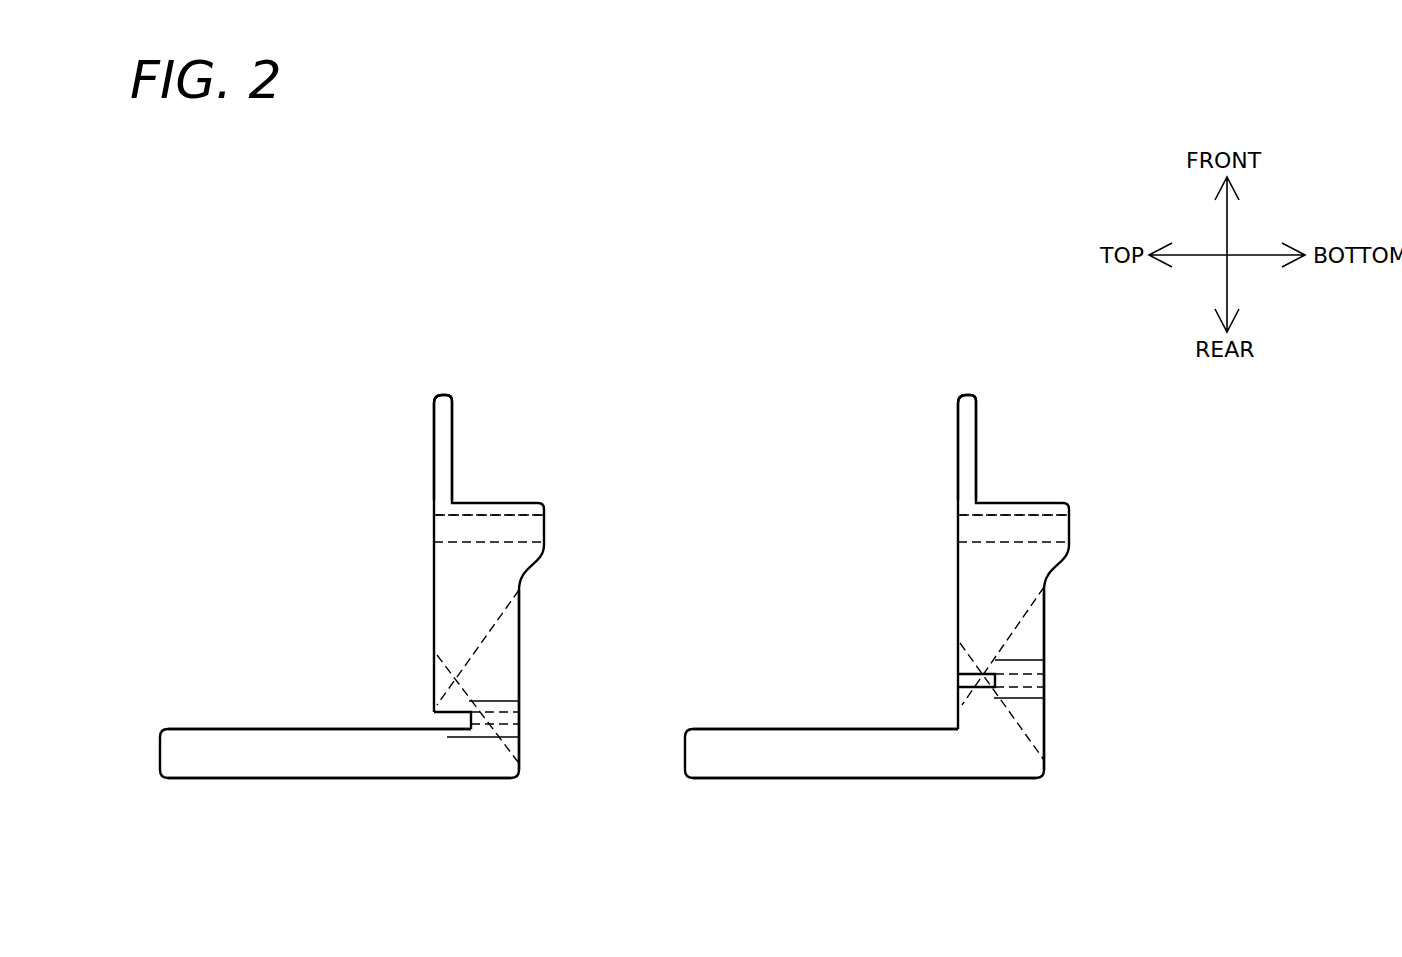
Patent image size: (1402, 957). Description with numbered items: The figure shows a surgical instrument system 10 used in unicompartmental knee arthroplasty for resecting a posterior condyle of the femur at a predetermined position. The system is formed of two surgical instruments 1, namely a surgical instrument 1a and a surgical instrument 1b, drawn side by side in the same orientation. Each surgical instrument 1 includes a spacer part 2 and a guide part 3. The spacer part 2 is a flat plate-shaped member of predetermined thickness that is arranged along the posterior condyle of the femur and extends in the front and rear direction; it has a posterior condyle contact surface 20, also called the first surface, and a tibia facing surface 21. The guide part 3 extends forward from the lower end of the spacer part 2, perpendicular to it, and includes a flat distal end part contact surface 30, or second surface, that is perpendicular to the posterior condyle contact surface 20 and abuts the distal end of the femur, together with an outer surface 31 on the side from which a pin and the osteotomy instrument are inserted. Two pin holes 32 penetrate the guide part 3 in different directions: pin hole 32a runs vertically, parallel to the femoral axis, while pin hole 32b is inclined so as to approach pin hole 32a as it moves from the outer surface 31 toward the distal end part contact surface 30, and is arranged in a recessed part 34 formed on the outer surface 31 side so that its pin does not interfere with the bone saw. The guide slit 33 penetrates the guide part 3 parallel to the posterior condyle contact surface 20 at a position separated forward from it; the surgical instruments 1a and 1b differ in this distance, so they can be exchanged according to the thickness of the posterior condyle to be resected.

The surgical instrument system 10 is at (757, 289).
The surgical instrument 1 is at (631, 621).
The surgical instrument 1a is at (519, 422).
The surgical instrument 1b is at (1044, 422).
The spacer part 2 is at (146, 775).
The posterior condyle contact surface 20 is at (295, 728).
The tibia facing surface 21 is at (272, 780).
The guide part 3 is at (537, 566).
The distal end part contact surface 30 is at (434, 460).
The outer surface 31 is at (519, 617).
The pin hole 32 is at (489, 528).
The pin hole 32a is at (512, 514).
The pin hole 32b is at (437, 668).
The guide slit 33 is at (442, 733).
The recessed part 34 is at (488, 633).